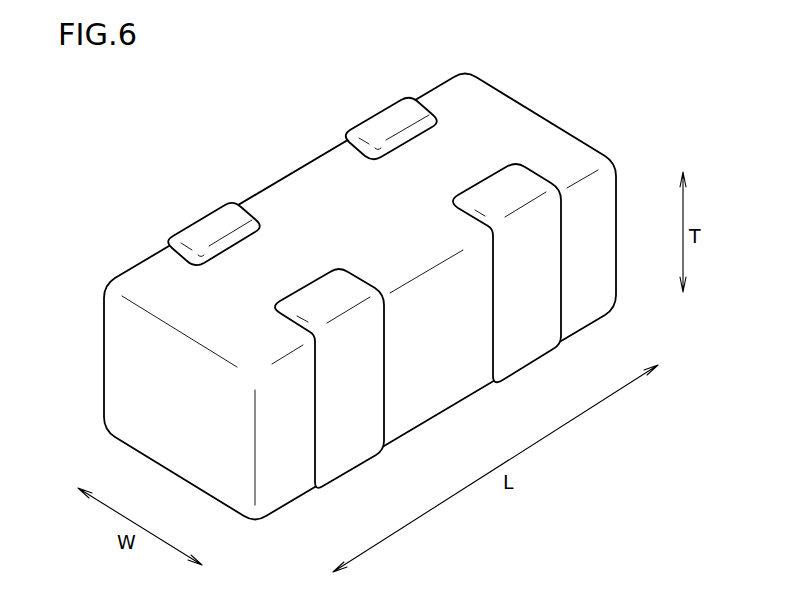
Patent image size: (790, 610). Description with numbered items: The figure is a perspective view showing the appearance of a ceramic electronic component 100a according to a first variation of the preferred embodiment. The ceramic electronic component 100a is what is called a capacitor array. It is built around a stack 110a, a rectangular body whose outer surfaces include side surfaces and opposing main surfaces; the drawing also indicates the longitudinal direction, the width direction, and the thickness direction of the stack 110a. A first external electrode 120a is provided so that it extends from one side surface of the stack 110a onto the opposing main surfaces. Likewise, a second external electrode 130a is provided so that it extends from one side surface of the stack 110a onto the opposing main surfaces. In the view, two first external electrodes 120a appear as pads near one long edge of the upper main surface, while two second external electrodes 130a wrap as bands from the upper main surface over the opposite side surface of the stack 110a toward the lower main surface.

The ceramic electronic component 100a is at (674, 67).
The stack 110a is at (280, 178).
The first external electrode 120a is at (198, 218).
The second external electrode 130a is at (354, 470).